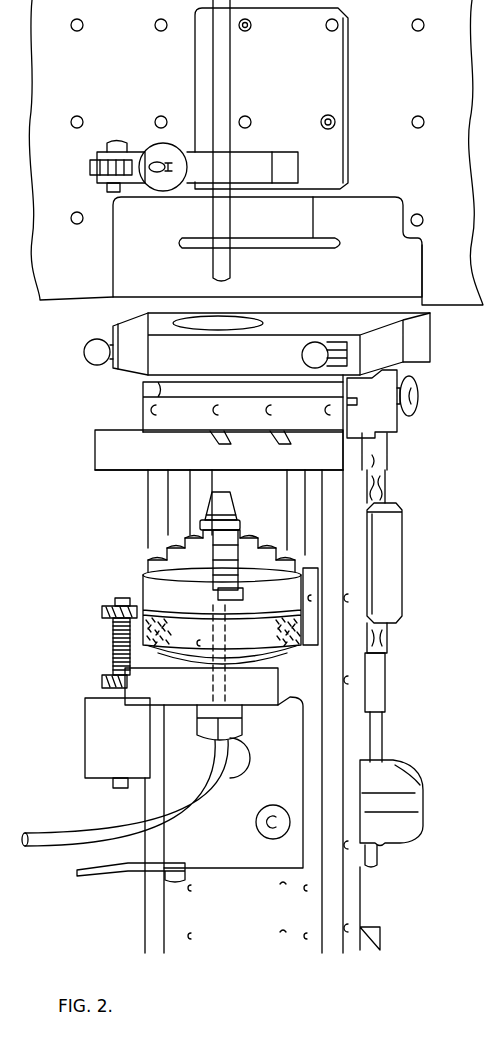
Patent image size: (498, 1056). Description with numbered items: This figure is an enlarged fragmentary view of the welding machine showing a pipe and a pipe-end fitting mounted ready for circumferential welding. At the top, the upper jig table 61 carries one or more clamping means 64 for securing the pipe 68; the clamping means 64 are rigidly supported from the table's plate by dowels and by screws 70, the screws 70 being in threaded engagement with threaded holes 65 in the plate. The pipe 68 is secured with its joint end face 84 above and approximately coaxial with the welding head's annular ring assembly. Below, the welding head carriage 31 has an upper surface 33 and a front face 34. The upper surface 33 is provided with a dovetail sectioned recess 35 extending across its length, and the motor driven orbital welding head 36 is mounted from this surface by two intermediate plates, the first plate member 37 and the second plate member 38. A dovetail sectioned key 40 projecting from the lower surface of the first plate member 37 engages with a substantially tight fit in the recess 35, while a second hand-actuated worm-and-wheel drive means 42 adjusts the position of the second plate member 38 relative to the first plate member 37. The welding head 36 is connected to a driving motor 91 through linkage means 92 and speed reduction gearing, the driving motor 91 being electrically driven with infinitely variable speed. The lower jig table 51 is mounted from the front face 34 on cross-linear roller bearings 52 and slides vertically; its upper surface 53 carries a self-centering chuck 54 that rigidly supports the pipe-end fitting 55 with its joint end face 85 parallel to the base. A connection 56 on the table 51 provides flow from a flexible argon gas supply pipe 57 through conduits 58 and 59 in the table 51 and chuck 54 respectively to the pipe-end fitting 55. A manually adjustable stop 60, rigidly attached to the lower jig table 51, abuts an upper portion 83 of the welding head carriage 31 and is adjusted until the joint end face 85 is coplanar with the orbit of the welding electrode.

The upper jig table 61 is at (129, 72).
The clamping means 64 is at (137, 152).
The threaded holes 65 is at (424, 118).
The pipe 68 is at (222, 68).
The screws 70 is at (335, 119).
The joint end face 84 is at (213, 283).
The motor driven orbital welding head 36 is at (120, 318).
The second plate member 38 is at (158, 395).
The first plate member 37 is at (152, 420).
The upper surface 33 is at (118, 427).
The dovetail sectioned key 40 is at (226, 445).
The dovetail sectioned recess 35 is at (272, 449).
The second hand-actuated worm-and-wheel drive means 42 is at (420, 397).
The upper portion 83 is at (108, 470).
The front face 34 is at (148, 482).
The welding head carriage 31 is at (268, 495).
The joint end face 85 is at (226, 492).
The pipe-end fitting 55 is at (200, 515).
The self-centering chuck 54 is at (147, 588).
The conduit 59 is at (224, 612).
The manually adjustable stop 60 is at (100, 618).
The linkage means 92 is at (385, 572).
The cross-linear roller bearings 52 is at (300, 622).
The upper surface 53 is at (288, 660).
The conduit 58 is at (217, 695).
The connection 56 is at (205, 731).
The lower jig table 51 is at (285, 762).
The flexible argon gas supply pipe 57 is at (65, 840).
The driving motor 91 is at (410, 797).